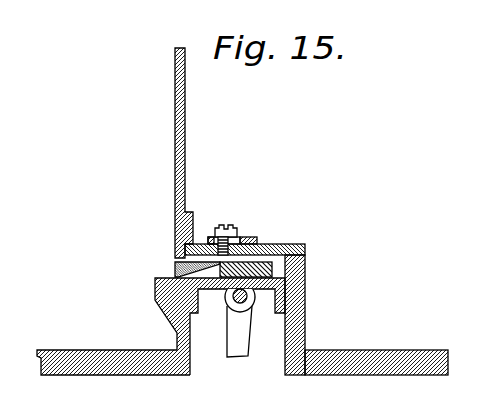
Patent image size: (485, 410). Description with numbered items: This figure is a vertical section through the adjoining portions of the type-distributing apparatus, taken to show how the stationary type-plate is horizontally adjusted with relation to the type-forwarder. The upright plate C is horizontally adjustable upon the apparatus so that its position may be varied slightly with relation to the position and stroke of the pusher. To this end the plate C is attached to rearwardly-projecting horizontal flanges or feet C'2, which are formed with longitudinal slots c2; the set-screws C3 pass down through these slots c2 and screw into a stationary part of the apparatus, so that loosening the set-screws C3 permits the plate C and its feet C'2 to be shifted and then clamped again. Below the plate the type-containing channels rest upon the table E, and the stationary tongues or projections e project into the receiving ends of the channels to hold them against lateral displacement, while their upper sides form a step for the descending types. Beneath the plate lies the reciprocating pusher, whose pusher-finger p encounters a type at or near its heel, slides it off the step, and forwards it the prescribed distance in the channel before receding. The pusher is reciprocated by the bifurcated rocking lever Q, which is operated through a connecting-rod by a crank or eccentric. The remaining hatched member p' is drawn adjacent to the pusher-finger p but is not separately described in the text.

The plate C is at (186, 153).
The horizontal flanges or feet C'2 is at (245, 291).
The longitudinal slots c2 is at (210, 237).
The set-screws C3 is at (226, 232).
The pusher-finger p is at (174, 267).
The cam block p' is at (246, 270).
The stationary tongues or projections e is at (220, 326).
The table E is at (242, 353).
The bifurcated rocking lever Q is at (242, 323).